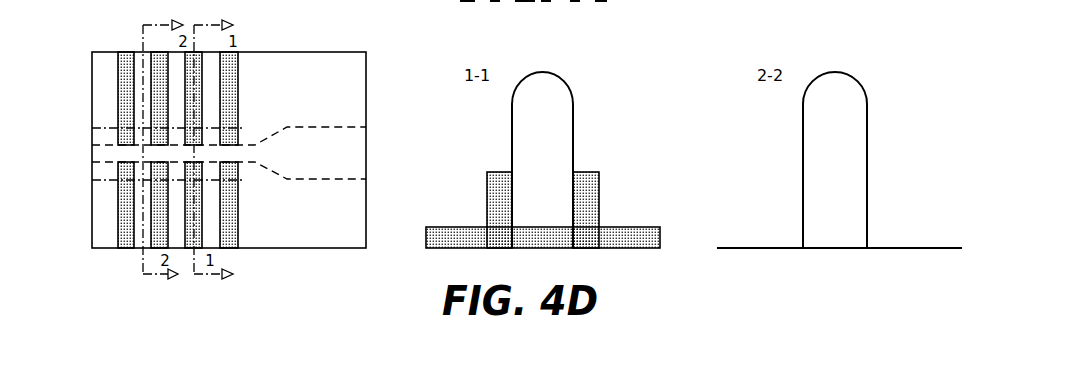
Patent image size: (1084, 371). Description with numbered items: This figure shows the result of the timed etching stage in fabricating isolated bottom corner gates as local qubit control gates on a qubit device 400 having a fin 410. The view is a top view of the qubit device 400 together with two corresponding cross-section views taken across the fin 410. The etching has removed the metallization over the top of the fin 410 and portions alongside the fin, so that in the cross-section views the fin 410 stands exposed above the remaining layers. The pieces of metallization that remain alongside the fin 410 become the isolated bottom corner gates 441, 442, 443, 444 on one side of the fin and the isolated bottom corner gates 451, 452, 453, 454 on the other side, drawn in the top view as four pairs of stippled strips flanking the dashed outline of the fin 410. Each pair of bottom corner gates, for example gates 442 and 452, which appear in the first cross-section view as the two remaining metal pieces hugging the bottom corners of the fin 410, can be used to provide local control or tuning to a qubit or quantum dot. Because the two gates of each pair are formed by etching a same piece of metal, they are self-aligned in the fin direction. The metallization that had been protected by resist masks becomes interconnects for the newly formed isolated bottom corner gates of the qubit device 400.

The qubit device 400 is at (301, 242).
The fin 410 is at (72, 150).
The isolated bottom corner gate 441 is at (230, 137).
The isolated bottom corner gate 442 is at (197, 137).
The isolated bottom corner gate 443 is at (160, 137).
The isolated bottom corner gate 444 is at (125, 137).
The isolated bottom corner gate 451 is at (230, 172).
The isolated bottom corner gate 452 is at (195, 172).
The isolated bottom corner gate 453 is at (160, 172).
The isolated bottom corner gate 454 is at (126, 172).